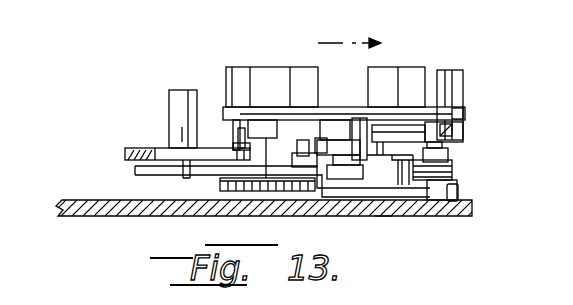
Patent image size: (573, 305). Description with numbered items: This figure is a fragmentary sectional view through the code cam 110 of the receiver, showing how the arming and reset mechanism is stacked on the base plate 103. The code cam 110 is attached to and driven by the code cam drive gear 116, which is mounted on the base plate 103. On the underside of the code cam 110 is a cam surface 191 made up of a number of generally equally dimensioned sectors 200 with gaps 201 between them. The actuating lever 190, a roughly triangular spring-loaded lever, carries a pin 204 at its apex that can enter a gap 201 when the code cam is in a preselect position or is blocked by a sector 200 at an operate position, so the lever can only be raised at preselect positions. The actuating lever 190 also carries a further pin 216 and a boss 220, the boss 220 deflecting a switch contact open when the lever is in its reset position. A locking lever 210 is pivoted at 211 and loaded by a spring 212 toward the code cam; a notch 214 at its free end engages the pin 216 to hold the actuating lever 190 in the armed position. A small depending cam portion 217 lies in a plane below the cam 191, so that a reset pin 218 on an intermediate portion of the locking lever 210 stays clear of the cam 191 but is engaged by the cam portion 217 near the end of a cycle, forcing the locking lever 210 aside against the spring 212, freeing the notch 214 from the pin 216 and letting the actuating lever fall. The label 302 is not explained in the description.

The base plate 103 is at (108, 215).
The code cam 110 is at (465, 77).
The code cam drive gear 116 is at (215, 208).
The actuating lever 190 is at (135, 148).
The cam surface 191 is at (452, 150).
The sectors 200 is at (463, 132).
The gaps 201 is at (358, 140).
The pin 204 is at (228, 132).
The locking lever 210 is at (383, 215).
The pivot 211 is at (465, 112).
The spring 212 is at (458, 195).
The notch 214 is at (135, 168).
The pin 216 is at (183, 177).
The cam portion 217 is at (320, 143).
The reset pin 218 is at (303, 150).
The boss 220 is at (170, 98).
The carriage 302 is at (414, 72).